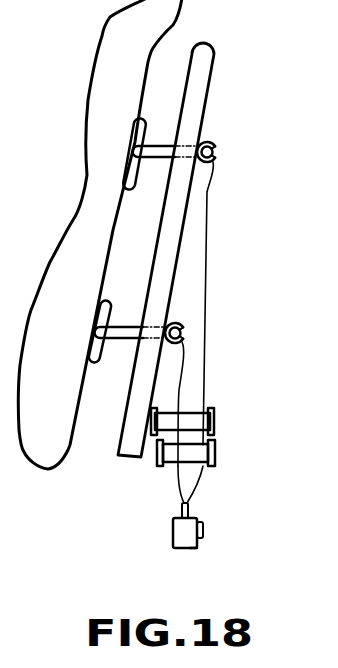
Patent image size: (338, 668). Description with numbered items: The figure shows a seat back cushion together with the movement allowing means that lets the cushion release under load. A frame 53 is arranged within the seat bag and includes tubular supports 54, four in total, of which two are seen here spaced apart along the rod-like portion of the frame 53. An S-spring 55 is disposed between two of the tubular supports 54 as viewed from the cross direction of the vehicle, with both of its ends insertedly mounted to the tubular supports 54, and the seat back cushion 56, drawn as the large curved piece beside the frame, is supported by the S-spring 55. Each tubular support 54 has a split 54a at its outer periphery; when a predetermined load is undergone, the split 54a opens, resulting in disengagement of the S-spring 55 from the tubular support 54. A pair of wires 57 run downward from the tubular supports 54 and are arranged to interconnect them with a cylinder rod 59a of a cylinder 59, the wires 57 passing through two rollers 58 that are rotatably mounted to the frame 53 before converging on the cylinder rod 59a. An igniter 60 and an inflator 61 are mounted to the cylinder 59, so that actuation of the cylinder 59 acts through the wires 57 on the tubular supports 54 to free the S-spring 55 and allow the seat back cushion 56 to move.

The frame 53 is at (207, 53).
The tubular support 54 is at (208, 141).
The split 54a is at (219, 152).
The S-spring 55 is at (157, 145).
The seat back cushion 56 is at (102, 36).
The wire 57 is at (209, 221).
The roller 58 is at (215, 443).
The cylinder 59 is at (173, 537).
The cylinder rod 59a is at (182, 512).
The igniter 60 is at (198, 547).
The inflator 61 is at (203, 530).